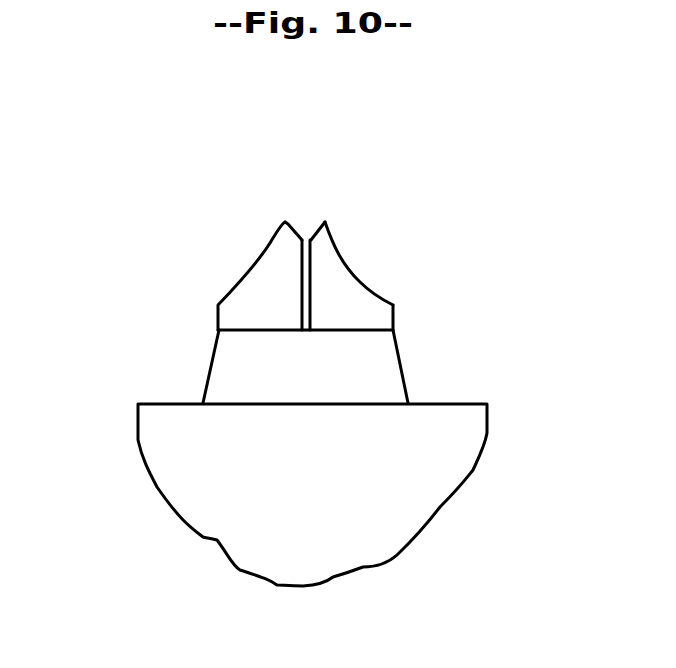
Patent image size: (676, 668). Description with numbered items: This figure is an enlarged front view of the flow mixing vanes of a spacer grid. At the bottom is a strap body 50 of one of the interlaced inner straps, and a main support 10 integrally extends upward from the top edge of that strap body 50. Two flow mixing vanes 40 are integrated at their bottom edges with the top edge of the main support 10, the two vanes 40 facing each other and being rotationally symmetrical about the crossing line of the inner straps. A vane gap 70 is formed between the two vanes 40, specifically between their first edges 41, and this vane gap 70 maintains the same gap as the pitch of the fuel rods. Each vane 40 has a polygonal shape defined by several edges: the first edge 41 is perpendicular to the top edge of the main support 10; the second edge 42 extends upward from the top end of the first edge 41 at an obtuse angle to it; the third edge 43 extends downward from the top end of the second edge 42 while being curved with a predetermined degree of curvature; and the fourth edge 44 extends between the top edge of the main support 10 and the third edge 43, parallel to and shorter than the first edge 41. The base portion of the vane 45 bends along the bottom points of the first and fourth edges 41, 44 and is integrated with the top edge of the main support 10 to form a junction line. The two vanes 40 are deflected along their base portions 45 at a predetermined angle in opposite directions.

The main support 10 is at (223, 360).
The flow mixing vane 40 is at (239, 259).
The first edge 41 is at (314, 293).
The second edge 42 is at (318, 232).
The third edge 43 is at (341, 252).
The fourth edge 44 is at (396, 316).
The base portion of the vane 45 is at (363, 330).
The strap body 50 is at (453, 477).
The vane gap 70 is at (303, 240).